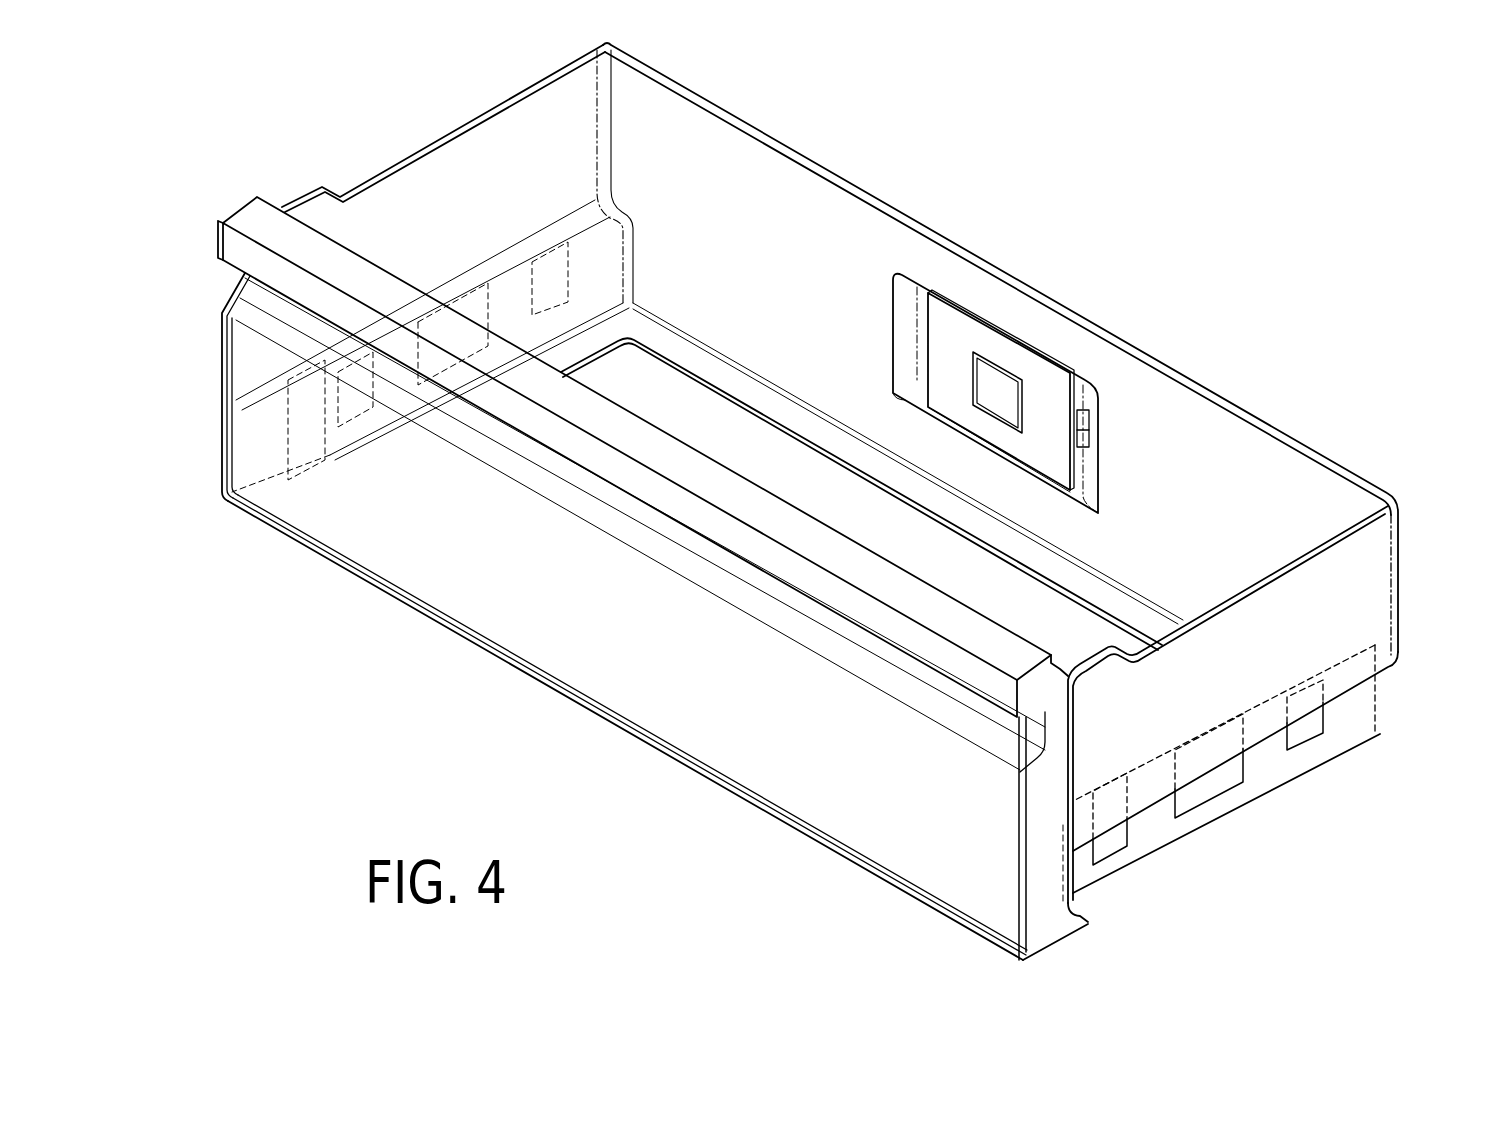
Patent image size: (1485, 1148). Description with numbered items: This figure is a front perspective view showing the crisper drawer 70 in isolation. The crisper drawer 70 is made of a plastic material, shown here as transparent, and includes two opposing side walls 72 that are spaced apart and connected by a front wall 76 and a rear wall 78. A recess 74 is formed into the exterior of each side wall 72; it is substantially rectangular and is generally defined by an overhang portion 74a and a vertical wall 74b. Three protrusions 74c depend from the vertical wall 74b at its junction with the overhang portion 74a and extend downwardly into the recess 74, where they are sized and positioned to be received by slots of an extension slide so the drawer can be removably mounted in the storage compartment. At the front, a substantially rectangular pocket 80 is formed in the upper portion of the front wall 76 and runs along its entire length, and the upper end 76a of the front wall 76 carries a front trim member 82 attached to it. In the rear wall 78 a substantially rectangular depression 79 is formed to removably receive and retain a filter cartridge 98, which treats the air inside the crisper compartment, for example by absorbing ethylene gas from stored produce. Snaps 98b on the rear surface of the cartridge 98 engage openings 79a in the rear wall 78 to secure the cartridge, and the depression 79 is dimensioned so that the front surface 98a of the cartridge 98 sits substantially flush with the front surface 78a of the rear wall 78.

The crisper drawer 70 is at (1226, 215).
The side wall 72 is at (478, 133).
The recess 74 is at (1165, 855).
The overhang portion 74a is at (1350, 688).
The vertical wall 74b is at (1350, 722).
The protrusion 74c is at (1307, 737).
The front wall 76 is at (750, 775).
The upper end of the front wall 76a is at (1037, 690).
The rear wall 78 is at (1290, 474).
The front surface of the rear wall 78a is at (768, 175).
The depression 79 is at (888, 316).
The opening 79a is at (1090, 418).
The pocket 80 is at (205, 278).
The front trim member 82 is at (232, 241).
The filter cartridge 98 is at (997, 335).
The front surface of the cartridge 98a is at (937, 368).
The snap 98b is at (1088, 432).